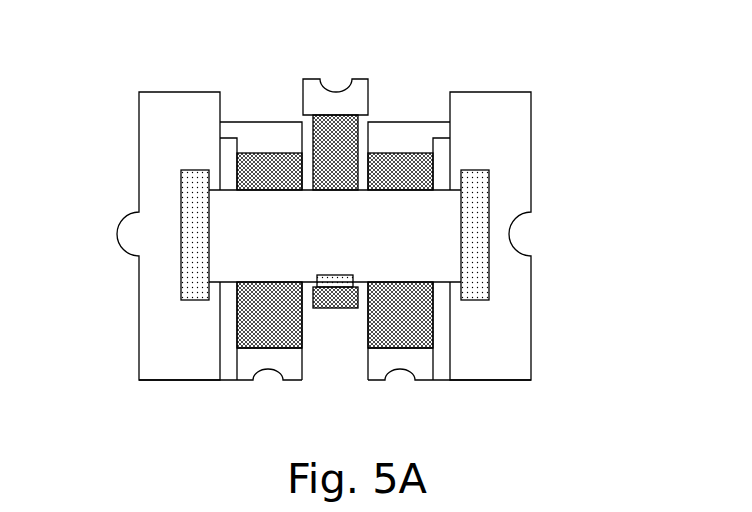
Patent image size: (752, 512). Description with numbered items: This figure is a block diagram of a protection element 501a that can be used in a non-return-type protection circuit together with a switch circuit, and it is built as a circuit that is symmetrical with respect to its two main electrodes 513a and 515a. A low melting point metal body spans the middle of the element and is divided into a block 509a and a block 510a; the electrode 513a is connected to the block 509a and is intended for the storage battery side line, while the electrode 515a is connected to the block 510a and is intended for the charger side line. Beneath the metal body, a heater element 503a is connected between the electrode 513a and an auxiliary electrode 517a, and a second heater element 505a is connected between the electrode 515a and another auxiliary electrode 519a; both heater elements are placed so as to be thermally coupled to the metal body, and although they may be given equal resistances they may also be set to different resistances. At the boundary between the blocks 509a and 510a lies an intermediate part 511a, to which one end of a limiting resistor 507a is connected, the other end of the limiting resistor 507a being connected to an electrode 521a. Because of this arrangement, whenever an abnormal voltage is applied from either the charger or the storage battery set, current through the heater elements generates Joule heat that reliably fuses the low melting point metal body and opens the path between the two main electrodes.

The protection element 501a is at (533, 53).
The heater element 503a is at (263, 170).
The heater element 505a is at (420, 352).
The limiting resistor 507a is at (372, 140).
The block 509a is at (297, 262).
The block 510a is at (433, 262).
The intermediate part 511a is at (340, 312).
The electrode 513a is at (158, 192).
The electrode 515a is at (508, 288).
The electrode 517a is at (250, 362).
The electrode 519a is at (380, 372).
The electrode 521a is at (340, 103).